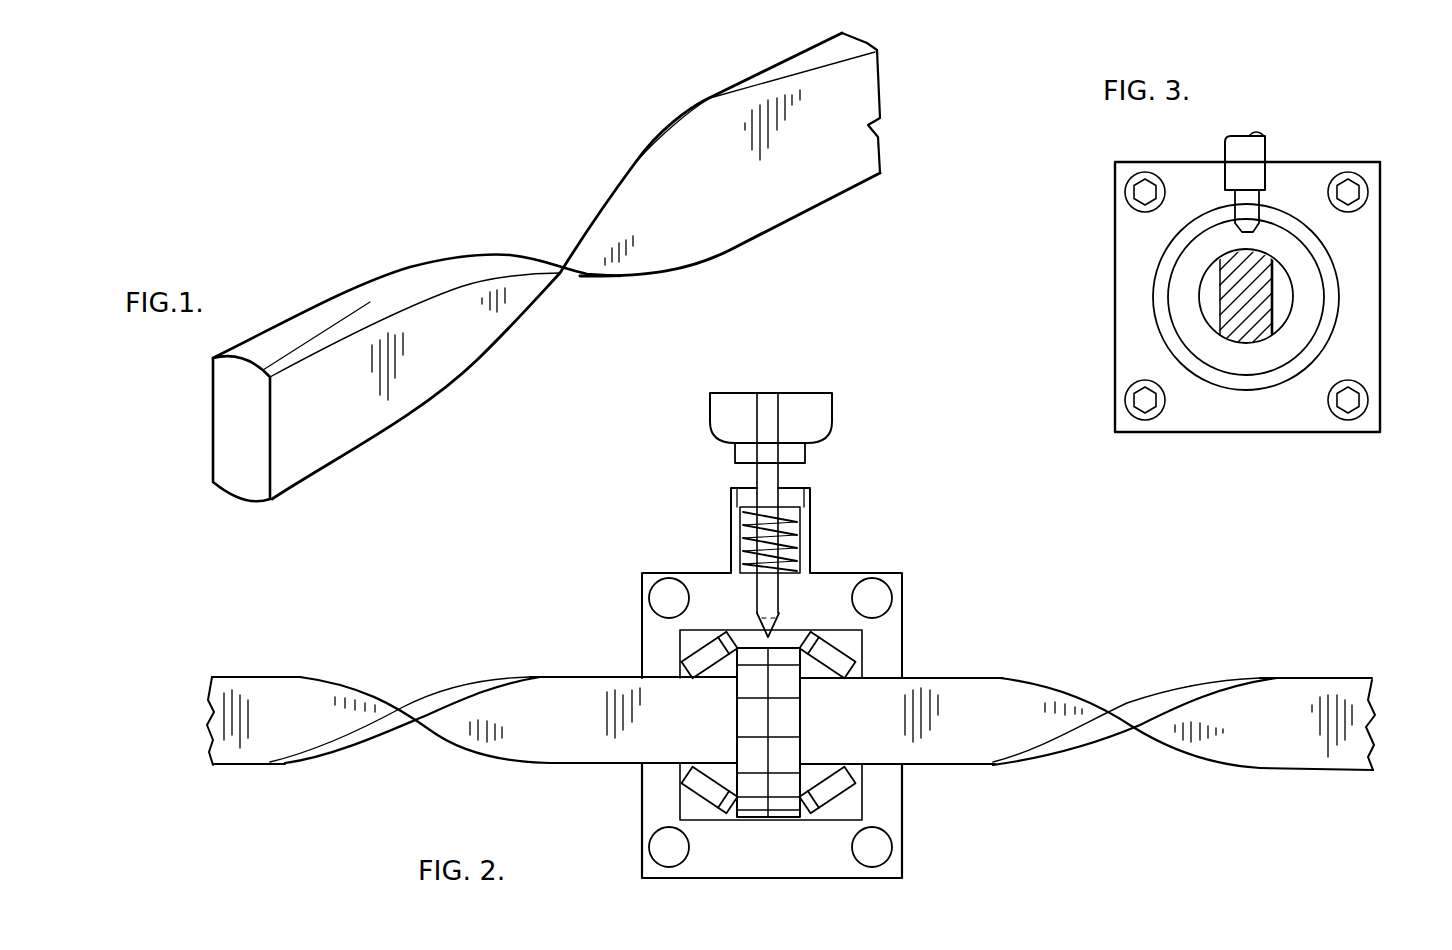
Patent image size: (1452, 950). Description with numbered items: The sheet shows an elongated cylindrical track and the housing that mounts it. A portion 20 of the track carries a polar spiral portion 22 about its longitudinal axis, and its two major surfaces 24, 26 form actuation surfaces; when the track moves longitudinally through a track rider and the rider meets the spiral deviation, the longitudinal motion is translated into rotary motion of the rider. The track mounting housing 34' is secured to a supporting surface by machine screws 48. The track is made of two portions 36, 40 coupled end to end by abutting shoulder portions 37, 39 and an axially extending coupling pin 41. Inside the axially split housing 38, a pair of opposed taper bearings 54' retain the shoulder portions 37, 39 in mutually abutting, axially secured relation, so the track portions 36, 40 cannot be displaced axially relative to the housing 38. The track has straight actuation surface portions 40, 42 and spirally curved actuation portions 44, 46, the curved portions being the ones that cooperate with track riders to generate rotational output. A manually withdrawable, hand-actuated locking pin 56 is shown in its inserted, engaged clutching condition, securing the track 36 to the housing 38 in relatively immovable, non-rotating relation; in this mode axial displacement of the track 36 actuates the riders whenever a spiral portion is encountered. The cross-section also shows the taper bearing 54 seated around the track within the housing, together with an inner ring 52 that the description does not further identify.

In FIG. 1, the track portion 20 is at (508, 362).
In FIG. 1, the spiral portion 22 is at (540, 222).
In FIG. 1, the major surface 24 is at (341, 412).
In FIG. 1, the major surface 26 is at (815, 180).
In FIG. 2, the track mounting housing 34' is at (582, 819).
In FIG. 2, the track portion 36 is at (306, 661).
In FIG. 3, the track portion 36 is at (1272, 298).
In FIG. 2, the shoulder portion 37 is at (750, 692).
In FIG. 2, the axially split housing 38 is at (903, 632).
In FIG. 2, the shoulder portion 39 is at (800, 737).
In FIG. 2, the track portion 40 is at (1260, 662).
In FIG. 2, the coupling pin 41 is at (807, 812).
In FIG. 2, the straight actuation surface portion 42 is at (957, 753).
In FIG. 2, the spirally curved actuation portion 44 is at (1123, 713).
In FIG. 2, the spirally curved actuation portion 46 is at (405, 727).
In FIG. 2, the machine screws 48 is at (682, 580).
In FIG. 3, the inner ring 52 is at (1182, 308).
In FIG. 3, the taper bearing 54 is at (1189, 297).
In FIG. 2, the taper bearing 54' is at (774, 762).
In FIG. 2, the locking pin 56 is at (783, 477).
In FIG. 3, the locking pin 56 is at (1268, 148).